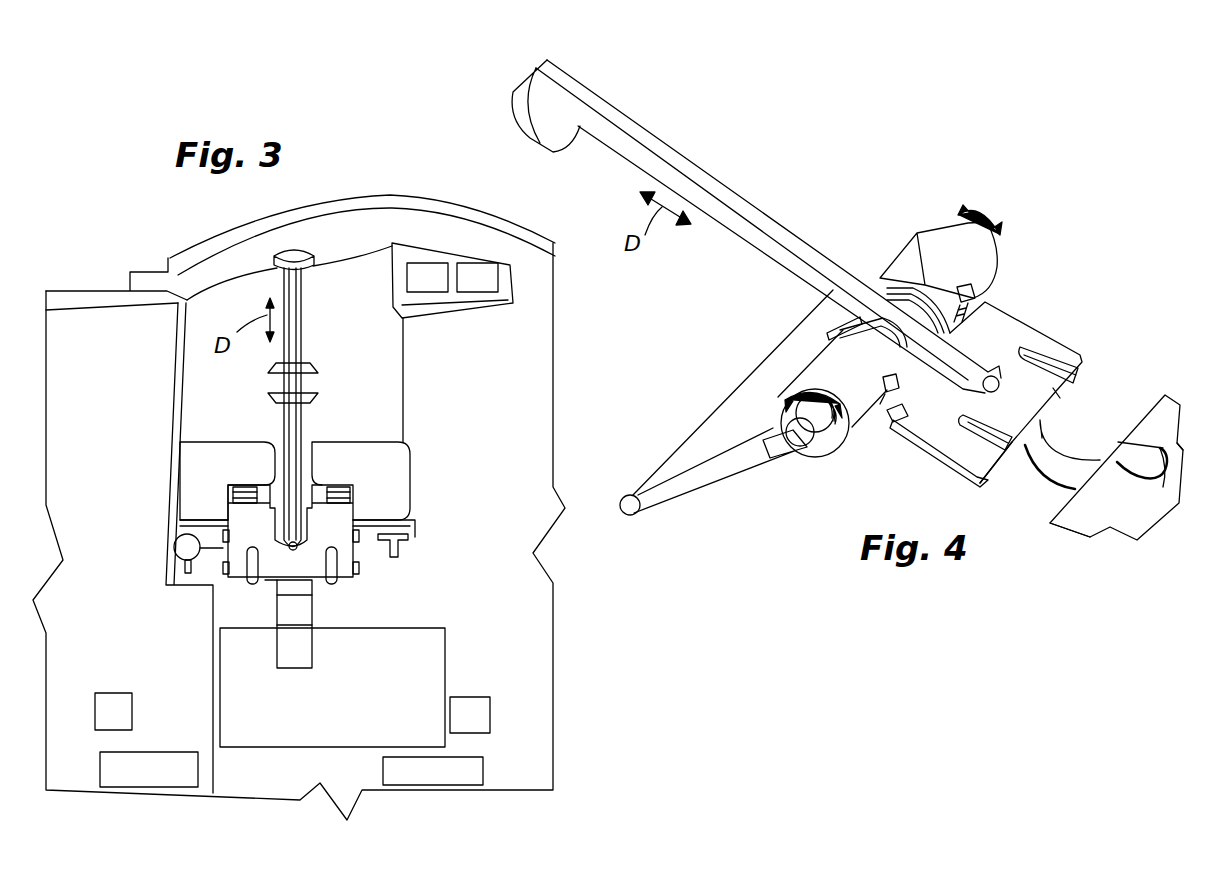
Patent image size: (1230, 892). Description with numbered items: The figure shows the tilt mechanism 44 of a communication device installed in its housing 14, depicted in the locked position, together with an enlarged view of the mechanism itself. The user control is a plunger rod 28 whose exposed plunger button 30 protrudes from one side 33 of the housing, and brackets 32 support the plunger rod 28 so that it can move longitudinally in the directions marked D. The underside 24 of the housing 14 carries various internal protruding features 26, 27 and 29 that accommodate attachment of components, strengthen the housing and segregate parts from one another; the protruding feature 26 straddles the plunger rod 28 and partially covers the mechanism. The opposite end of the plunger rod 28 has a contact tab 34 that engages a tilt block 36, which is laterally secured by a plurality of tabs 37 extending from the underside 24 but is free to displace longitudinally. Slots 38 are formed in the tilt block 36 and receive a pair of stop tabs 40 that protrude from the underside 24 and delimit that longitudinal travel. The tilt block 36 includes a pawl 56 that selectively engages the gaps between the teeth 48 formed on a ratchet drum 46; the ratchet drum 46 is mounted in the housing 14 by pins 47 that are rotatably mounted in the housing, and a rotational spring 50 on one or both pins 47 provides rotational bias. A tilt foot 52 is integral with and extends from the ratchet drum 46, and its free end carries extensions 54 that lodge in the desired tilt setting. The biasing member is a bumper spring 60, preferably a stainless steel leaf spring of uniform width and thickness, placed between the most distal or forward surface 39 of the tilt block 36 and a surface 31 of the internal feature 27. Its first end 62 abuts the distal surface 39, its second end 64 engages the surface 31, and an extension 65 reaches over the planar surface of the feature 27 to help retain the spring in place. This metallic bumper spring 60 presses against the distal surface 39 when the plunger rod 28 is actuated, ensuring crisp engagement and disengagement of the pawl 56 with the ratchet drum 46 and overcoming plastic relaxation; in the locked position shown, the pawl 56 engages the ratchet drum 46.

In FIG. 3, the housing 14 is at (388, 178).
In FIG. 3, the underside of the housing 24 is at (299, 531).
In FIG. 3, the protruding feature 26 is at (190, 452).
In FIG. 3, the internal feature 27 is at (453, 695).
In FIG. 4, the internal feature 27 is at (1072, 517).
In FIG. 3, the plunger rod 28 is at (300, 338).
In FIG. 4, the plunger rod 28 is at (773, 220).
In FIG. 3, the housing features 29 is at (157, 755).
In FIG. 4, the plunger button 30 is at (535, 108).
In FIG. 3, the surface of internal feature 31 is at (307, 667).
In FIG. 4, the surface of internal feature 31 is at (1152, 407).
In FIG. 3, the brackets 32 is at (316, 395).
In FIG. 3, the side of the housing 33 is at (322, 200).
In FIG. 3, the contact tab 34 is at (302, 562).
In FIG. 4, the contact tab 34 is at (988, 376).
In FIG. 3, the tilt block 36 is at (337, 520).
In FIG. 4, the tilt block 36 is at (997, 322).
In FIG. 3, the tabs 37 is at (223, 563).
In FIG. 3, the slots 38 is at (225, 535).
In FIG. 4, the slots 38 is at (1057, 348).
In FIG. 3, the distal surface of tilt block 39 is at (266, 585).
In FIG. 4, the distal surface of tilt block 39 is at (1012, 445).
In FIG. 3, the stop tabs 40 is at (257, 585).
In FIG. 4, the tilt mechanism 44 is at (997, 185).
In FIG. 4, the ratchet drum 46 is at (947, 230).
In FIG. 4, the pins 47 is at (990, 220).
In FIG. 3, the teeth 48 is at (242, 487).
In FIG. 4, the teeth 48 is at (975, 287).
In FIG. 4, the rotational spring 50 is at (812, 400).
In FIG. 4, the tilt foot 52 is at (745, 380).
In FIG. 4, the extensions 54 is at (631, 516).
In FIG. 4, the pawl 56 is at (993, 300).
In FIG. 3, the bumper spring 60 is at (295, 618).
In FIG. 4, the bumper spring 60 is at (1045, 452).
In FIG. 4, the first end of bumper spring 62 is at (1035, 420).
In FIG. 4, the second end of bumper spring 64 is at (1175, 452).
In FIG. 4, the extension of bumper spring 65 is at (1163, 483).